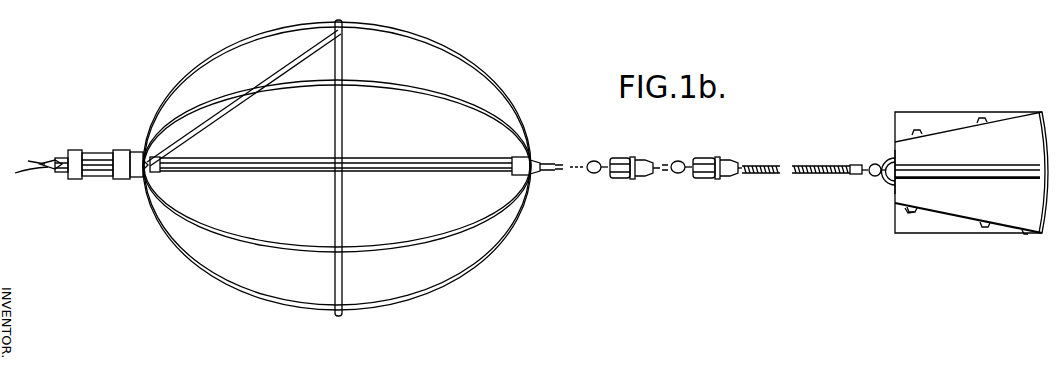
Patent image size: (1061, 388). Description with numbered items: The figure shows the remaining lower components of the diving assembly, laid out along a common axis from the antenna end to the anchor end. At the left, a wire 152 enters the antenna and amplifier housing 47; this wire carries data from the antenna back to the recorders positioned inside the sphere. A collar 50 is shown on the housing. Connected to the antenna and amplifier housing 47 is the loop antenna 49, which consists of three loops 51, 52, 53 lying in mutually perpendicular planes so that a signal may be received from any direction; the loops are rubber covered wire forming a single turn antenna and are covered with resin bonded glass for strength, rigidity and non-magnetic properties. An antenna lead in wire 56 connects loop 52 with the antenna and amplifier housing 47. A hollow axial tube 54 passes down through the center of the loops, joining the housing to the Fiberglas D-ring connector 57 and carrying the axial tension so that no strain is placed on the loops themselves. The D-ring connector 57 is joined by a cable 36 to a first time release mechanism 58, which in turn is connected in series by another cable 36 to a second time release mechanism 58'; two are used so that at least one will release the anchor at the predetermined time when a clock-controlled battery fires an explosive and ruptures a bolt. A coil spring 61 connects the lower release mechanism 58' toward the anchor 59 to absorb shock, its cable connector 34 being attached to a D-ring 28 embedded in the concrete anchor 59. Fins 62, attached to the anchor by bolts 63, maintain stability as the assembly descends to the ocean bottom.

The D-ring 28 is at (892, 185).
The cable connector 34 is at (870, 178).
The cable 36 is at (40, 162).
The antenna and amplifier housing 47 is at (95, 157).
The loop antenna 49 is at (337, 166).
The collar 50 is at (68, 150).
The loop 51 is at (395, 30).
The loop 52 is at (343, 140).
The loop 53 is at (395, 81).
The central shaft 54 is at (240, 160).
The antenna lead in wire 56 is at (268, 75).
The Fiberglas D-ring connector 57 is at (537, 174).
The time release mechanism 58 is at (715, 153).
The time release mechanism 58' is at (631, 153).
The anchor 59 is at (893, 150).
The coil spring 61 is at (750, 173).
The fins 62 is at (920, 112).
The bolts 63 is at (908, 210).
The wire 152 is at (55, 174).